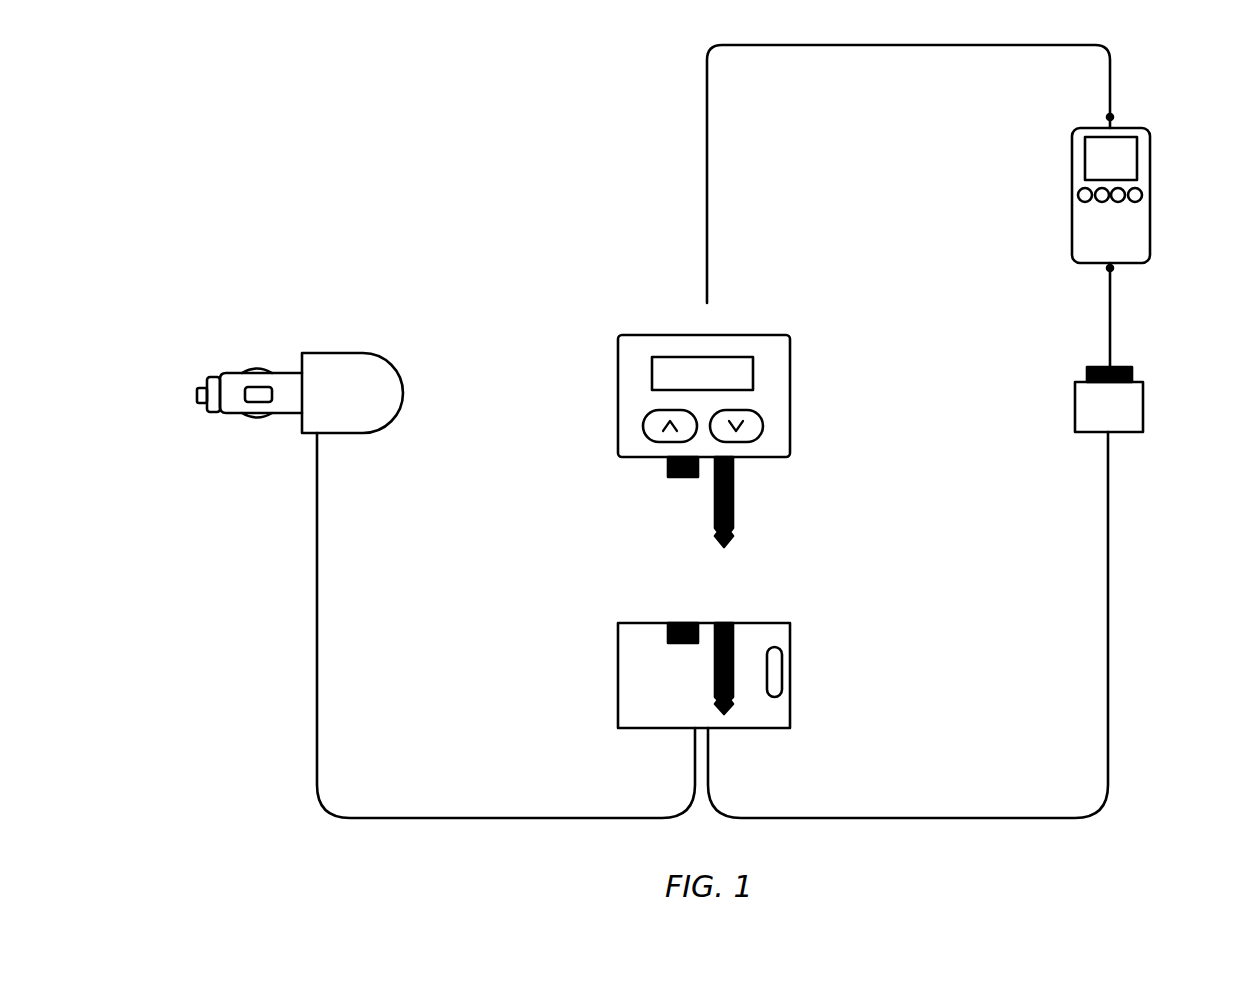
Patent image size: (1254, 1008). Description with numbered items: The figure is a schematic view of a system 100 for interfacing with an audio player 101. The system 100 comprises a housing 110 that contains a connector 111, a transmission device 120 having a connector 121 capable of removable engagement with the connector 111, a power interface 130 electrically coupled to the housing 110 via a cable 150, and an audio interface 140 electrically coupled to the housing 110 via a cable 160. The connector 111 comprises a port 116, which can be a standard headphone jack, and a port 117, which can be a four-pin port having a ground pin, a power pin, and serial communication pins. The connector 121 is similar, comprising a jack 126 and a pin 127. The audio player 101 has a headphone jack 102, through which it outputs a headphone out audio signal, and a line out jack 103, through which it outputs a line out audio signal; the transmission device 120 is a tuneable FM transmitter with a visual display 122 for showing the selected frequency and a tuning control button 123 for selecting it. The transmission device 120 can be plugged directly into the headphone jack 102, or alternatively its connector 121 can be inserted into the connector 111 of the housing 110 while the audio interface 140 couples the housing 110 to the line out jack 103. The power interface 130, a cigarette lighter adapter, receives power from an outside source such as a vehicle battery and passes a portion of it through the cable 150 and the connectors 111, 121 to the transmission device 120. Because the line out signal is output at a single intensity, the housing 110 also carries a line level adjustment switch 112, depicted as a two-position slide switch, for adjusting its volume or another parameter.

The system 100 is at (390, 152).
The audio player 101 is at (1139, 198).
The headphone jack 102 is at (1106, 128).
The line out jack 103 is at (1106, 265).
The housing 110 is at (698, 656).
The connector 111 is at (693, 648).
The line level adjustment switch 112 is at (783, 678).
The port 116 is at (732, 647).
The port 117 is at (675, 638).
The transmission device 120 is at (823, 316).
The connector 121 is at (716, 522).
The visual display 122 is at (660, 375).
The tuning control button 123 is at (650, 437).
The jack 126 is at (733, 505).
The pin 127 is at (680, 467).
The power interface 130 is at (273, 382).
The audio interface 140 is at (1127, 410).
The cable 150 is at (317, 603).
The cable 160 is at (1108, 600).